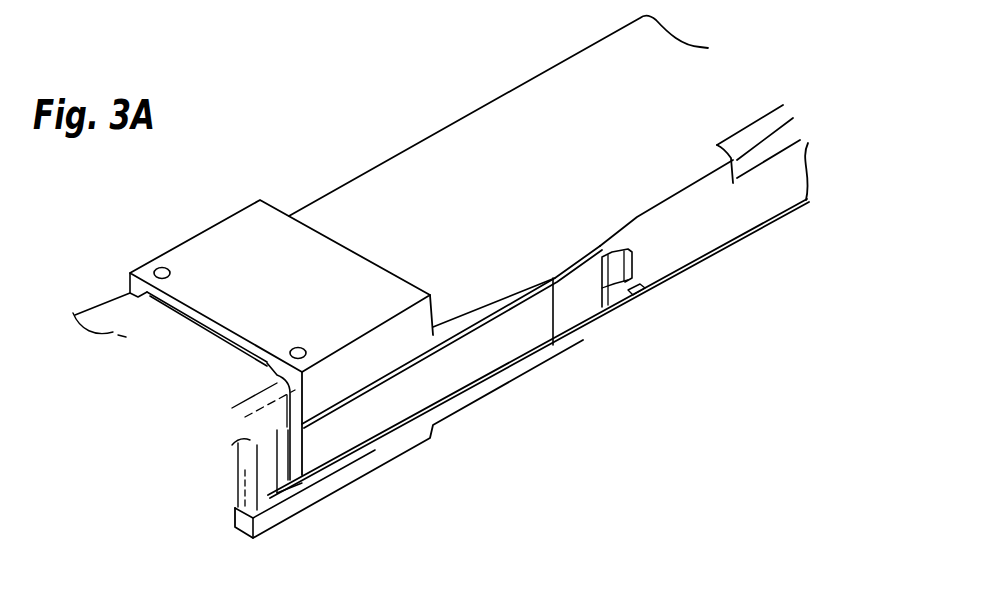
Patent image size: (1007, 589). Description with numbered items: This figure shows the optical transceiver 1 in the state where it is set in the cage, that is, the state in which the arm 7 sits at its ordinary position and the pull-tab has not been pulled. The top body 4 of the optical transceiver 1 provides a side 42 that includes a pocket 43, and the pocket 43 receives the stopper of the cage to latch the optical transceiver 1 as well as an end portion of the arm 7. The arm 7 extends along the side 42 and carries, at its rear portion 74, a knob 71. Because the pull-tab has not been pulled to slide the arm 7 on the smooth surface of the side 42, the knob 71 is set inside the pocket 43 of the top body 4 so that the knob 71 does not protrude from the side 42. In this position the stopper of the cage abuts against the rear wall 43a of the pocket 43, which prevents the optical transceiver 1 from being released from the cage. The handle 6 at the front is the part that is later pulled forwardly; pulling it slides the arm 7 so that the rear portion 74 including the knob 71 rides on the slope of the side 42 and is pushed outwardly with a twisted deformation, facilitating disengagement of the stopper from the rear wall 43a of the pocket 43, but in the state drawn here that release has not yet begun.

The optical transceiver 1 is at (382, 94).
The top body 4 is at (550, 83).
The handle 6 is at (113, 293).
The arm 7 is at (348, 455).
The side 42 is at (713, 242).
The pocket 43 is at (595, 297).
The rear wall 43a is at (603, 252).
The knob 71 is at (642, 292).
The rear portion 74 is at (586, 281).